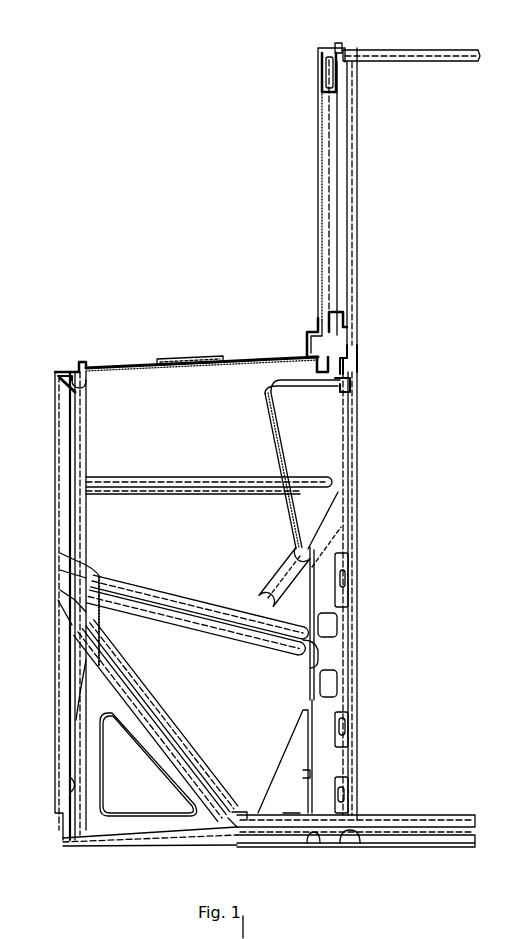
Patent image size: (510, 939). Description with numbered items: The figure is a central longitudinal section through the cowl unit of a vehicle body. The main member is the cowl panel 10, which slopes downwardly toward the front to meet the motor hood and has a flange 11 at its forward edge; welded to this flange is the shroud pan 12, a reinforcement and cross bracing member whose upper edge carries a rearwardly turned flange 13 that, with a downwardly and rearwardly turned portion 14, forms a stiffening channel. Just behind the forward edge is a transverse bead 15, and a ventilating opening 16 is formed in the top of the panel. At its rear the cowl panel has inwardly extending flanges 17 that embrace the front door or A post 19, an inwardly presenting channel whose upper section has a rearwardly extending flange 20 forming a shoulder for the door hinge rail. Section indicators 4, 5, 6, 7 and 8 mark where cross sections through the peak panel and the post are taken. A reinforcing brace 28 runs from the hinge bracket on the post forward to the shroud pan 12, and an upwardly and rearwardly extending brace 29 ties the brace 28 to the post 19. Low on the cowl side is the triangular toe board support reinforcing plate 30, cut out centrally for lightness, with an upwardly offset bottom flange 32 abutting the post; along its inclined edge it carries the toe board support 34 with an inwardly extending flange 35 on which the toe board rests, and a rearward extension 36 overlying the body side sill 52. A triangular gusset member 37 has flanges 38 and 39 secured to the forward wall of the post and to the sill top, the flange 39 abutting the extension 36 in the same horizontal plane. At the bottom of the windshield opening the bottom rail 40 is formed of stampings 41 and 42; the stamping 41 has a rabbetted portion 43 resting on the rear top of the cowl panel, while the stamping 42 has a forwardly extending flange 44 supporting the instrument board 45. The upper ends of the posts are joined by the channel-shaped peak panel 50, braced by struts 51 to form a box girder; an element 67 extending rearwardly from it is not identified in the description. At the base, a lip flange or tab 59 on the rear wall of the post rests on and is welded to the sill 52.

The section line 4- 4 is at (370, 134).
The section line 5- 5 is at (305, 92).
The section line 6- 6 is at (363, 590).
The section line 7- 7 is at (363, 665).
The section line 8- 8 is at (375, 804).
The cowl panel 10 is at (127, 363).
The flange 11 is at (58, 377).
The shroud pan 12 is at (72, 433).
The rearwardly turned flange 13 is at (86, 383).
The downwardly and rearwardly turned portion 14 is at (76, 395).
The transversely extending bead 15 is at (83, 363).
The ventilating opening 16 is at (176, 360).
The inwardly extending flanges 17 is at (350, 455).
The A post 19 is at (338, 238).
The rearwardly extending flange 20 is at (350, 196).
The reinforcing brace 28 is at (157, 600).
The reinforcing brace 29 is at (254, 594).
The toe board support reinforcing plate 30 is at (100, 828).
The bottom flange 32 is at (192, 836).
The toe board support 34 is at (142, 702).
The inwardly extending flange 35 is at (122, 696).
The rearward extension 36 is at (244, 811).
The gusset member 37 is at (290, 745).
The flange 38 is at (308, 773).
The flange 39 is at (292, 803).
The bottom rail 40 is at (343, 316).
The stamping 41 is at (317, 330).
The stamping 42 is at (357, 362).
The rabbetted portion 43 is at (329, 359).
The forwardly extending flange 44 is at (346, 386).
The instrument board 45 is at (274, 430).
The peak panel 50 is at (322, 72).
The struts 51 is at (338, 43).
The body side sill 52 is at (435, 822).
The lip flange 59 is at (362, 836).
The top beam 67 is at (430, 52).